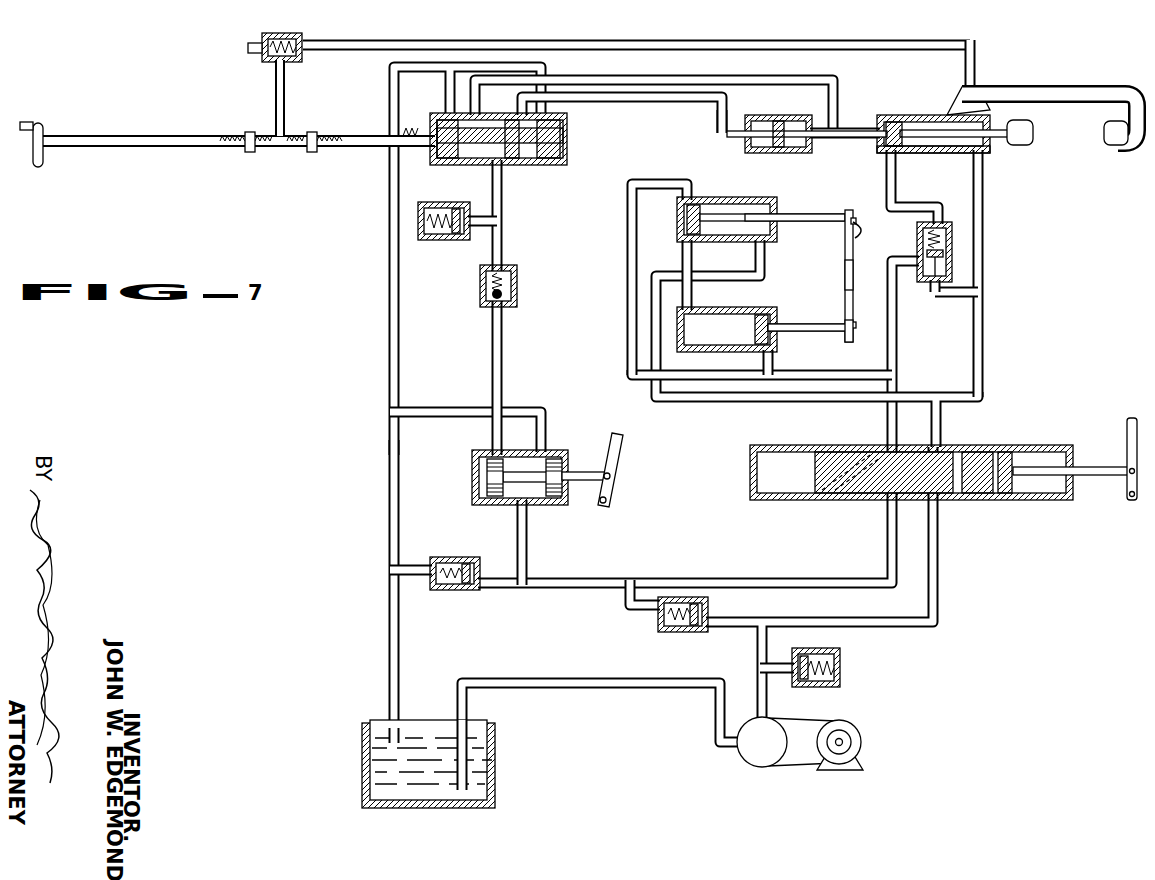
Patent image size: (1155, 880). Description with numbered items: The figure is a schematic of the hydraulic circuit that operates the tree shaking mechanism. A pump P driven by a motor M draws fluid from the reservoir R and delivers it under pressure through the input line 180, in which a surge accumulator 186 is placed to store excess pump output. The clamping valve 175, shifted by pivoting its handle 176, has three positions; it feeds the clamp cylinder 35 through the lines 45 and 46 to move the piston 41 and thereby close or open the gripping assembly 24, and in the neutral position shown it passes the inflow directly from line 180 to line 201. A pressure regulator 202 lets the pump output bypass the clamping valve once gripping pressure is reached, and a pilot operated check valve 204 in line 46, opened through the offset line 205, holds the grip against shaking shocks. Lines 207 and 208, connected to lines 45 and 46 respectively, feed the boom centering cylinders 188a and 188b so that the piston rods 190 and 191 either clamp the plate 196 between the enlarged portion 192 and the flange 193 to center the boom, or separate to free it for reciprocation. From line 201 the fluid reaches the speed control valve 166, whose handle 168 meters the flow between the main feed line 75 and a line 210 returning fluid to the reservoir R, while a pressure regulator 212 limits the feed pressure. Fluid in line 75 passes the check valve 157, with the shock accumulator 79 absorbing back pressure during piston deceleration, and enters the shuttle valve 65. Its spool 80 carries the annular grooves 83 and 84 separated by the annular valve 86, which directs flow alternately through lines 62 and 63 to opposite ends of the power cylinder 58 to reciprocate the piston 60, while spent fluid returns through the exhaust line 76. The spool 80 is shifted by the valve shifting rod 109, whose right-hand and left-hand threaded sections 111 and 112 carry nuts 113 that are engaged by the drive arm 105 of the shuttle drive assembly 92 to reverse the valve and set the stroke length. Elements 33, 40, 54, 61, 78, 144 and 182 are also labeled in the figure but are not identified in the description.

The gripping assembly 24 is at (1052, 85).
The control arm with knobs 33 is at (1072, 86).
The clamp cylinder 35 is at (965, 154).
The cylinder housing 40 is at (922, 132).
The piston 41 is at (895, 122).
The feed line 45 is at (984, 275).
The feed line 46 is at (885, 178).
The connecting rod conduit 54 is at (865, 140).
The power cylinder 58 is at (745, 150).
The piston 60 is at (778, 121).
The conduit junction 61 is at (715, 128).
The line 62 is at (615, 93).
The line 63 is at (698, 80).
The shuttle valve 65 is at (422, 163).
The main feed line 75 is at (503, 208).
The exhaust line 76 is at (388, 84).
The branch conduit 78 is at (478, 225).
The shock accumulator 79 is at (436, 241).
The spool 80 is at (568, 138).
The annular groove 83 is at (468, 160).
The annular groove 84 is at (545, 163).
The annular valve 86 is at (505, 165).
The shuttle drive assembly 92 is at (250, 39).
The drive arm 105 is at (275, 84).
The valve shifting rod 109 is at (232, 136).
The right-hand threaded section 111 is at (262, 151).
The left-hand threaded section 112 is at (296, 151).
The nut 113 is at (258, 108).
The handle 144 is at (50, 108).
The check valve 157 is at (518, 290).
The speed control valve 166 is at (475, 450).
The handle 168 is at (617, 432).
The clamping valve 175 is at (805, 500).
The handle 176 is at (1130, 418).
The input line 180 is at (940, 580).
The return conduit 182 is at (388, 596).
The surge accumulator 186 is at (842, 666).
The centering cylinder 188a is at (735, 305).
The centering cylinder 188b is at (735, 198).
The piston rod 190 is at (790, 324).
The piston rod 191 is at (832, 205).
The enlarged portion 192 is at (847, 338).
The flange 193 is at (853, 236).
The plate 196 is at (846, 276).
The line 201 is at (717, 578).
The pressure regulator 202 is at (710, 604).
The pilot operated check valve 204 is at (953, 240).
The offset line 205 is at (940, 296).
The hydraulic line 207 is at (850, 404).
The hydraulic line 208 is at (720, 382).
The line 210 is at (467, 410).
The pressure regulator 212 is at (478, 556).
The pump P is at (649, 736).
The motor M is at (862, 738).
The reservoir R is at (497, 757).